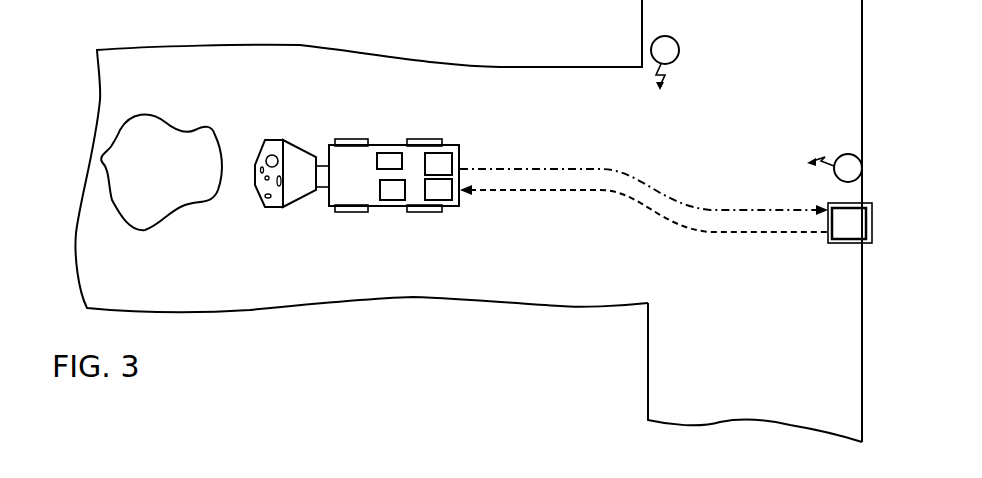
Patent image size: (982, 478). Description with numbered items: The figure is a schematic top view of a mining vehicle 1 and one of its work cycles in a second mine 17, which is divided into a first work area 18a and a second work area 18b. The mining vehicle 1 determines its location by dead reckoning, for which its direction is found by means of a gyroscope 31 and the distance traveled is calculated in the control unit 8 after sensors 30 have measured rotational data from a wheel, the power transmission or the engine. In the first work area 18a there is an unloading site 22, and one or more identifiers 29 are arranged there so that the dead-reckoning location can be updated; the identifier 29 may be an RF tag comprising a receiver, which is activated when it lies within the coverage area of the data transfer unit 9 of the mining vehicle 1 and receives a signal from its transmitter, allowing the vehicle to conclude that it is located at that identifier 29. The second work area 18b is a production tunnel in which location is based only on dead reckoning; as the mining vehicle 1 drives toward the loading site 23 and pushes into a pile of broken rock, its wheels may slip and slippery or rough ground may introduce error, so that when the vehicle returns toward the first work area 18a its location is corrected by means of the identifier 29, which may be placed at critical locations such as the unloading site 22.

The mining vehicle 1 is at (352, 188).
The control unit 8 is at (392, 188).
The data transfer unit 9 is at (388, 157).
The second mine 17 is at (463, 365).
The first work area 18a is at (781, 373).
The second work area 18b is at (392, 98).
The unloading site 22 is at (843, 225).
The loading site 23 is at (170, 182).
The identifier 29 is at (668, 47).
The sensors 30 is at (442, 165).
The gyroscope 31 is at (443, 195).